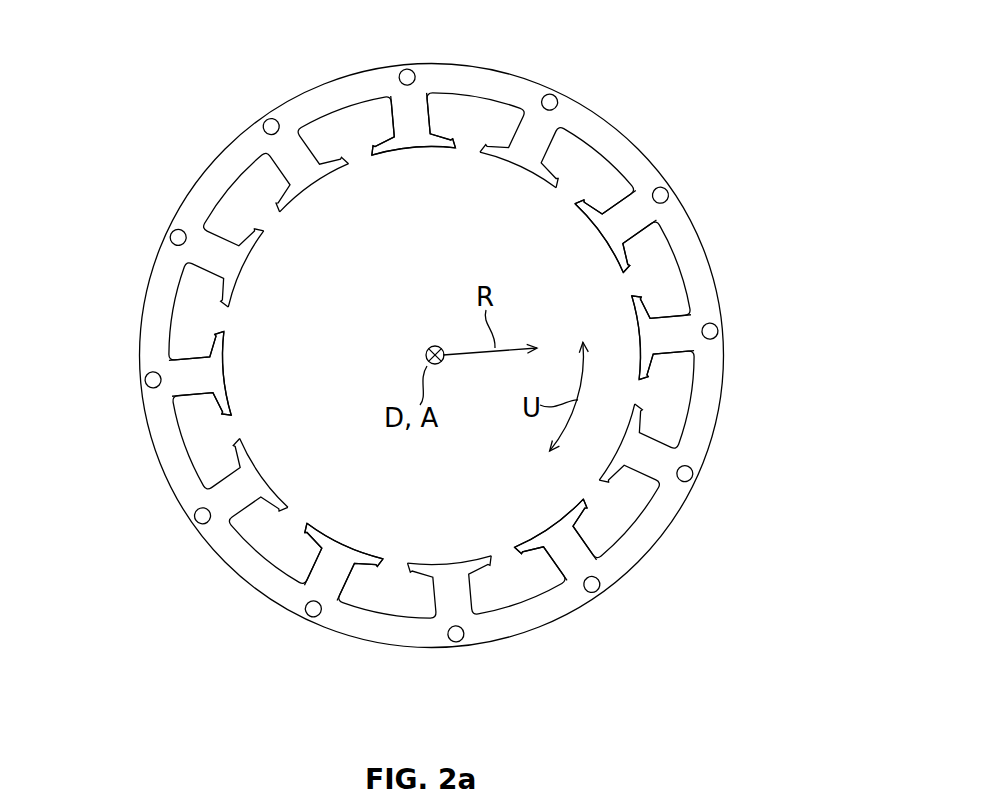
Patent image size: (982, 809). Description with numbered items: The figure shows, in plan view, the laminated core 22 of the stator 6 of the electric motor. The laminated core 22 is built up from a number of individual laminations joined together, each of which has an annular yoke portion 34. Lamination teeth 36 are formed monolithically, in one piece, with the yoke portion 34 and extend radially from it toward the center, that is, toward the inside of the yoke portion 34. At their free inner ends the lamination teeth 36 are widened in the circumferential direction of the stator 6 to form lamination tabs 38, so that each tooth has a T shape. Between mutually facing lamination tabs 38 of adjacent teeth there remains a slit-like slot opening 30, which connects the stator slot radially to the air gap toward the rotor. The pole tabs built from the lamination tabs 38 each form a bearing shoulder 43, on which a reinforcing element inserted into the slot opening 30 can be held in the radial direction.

The stator 6 is at (747, 100).
The laminated core 22 is at (446, 353).
The slot opening 30 is at (238, 384).
The yoke portion 34 is at (276, 52).
The lamination teeth 36 is at (410, 506).
The lamination tabs 38 is at (545, 200).
The bearing shoulder 43 is at (596, 372).